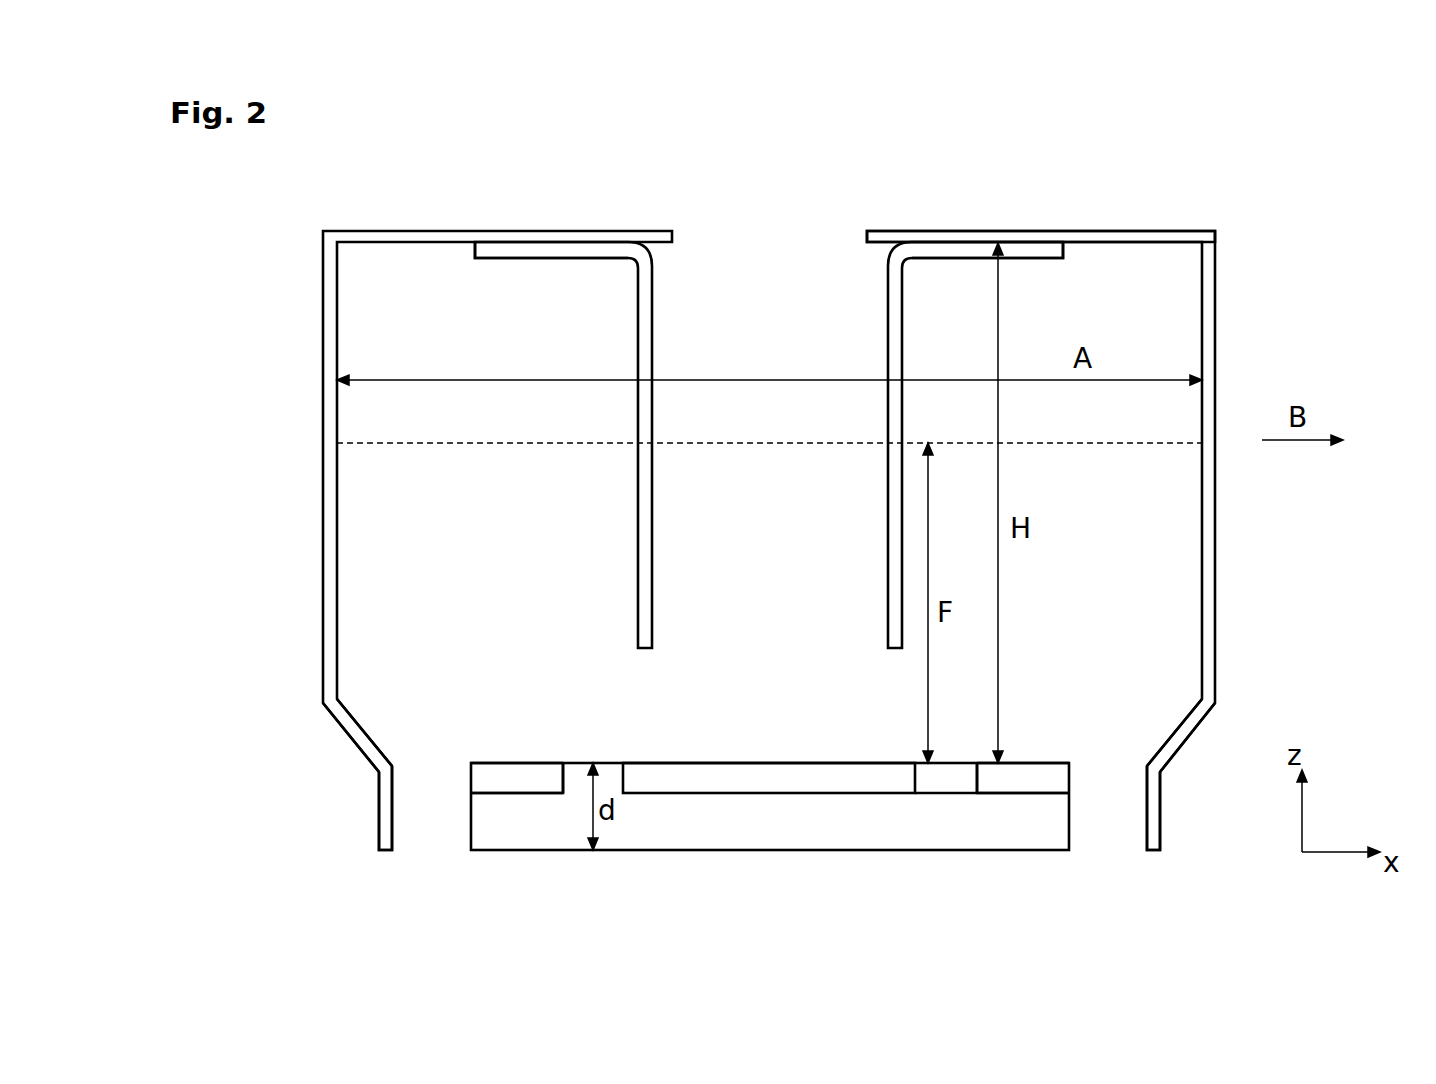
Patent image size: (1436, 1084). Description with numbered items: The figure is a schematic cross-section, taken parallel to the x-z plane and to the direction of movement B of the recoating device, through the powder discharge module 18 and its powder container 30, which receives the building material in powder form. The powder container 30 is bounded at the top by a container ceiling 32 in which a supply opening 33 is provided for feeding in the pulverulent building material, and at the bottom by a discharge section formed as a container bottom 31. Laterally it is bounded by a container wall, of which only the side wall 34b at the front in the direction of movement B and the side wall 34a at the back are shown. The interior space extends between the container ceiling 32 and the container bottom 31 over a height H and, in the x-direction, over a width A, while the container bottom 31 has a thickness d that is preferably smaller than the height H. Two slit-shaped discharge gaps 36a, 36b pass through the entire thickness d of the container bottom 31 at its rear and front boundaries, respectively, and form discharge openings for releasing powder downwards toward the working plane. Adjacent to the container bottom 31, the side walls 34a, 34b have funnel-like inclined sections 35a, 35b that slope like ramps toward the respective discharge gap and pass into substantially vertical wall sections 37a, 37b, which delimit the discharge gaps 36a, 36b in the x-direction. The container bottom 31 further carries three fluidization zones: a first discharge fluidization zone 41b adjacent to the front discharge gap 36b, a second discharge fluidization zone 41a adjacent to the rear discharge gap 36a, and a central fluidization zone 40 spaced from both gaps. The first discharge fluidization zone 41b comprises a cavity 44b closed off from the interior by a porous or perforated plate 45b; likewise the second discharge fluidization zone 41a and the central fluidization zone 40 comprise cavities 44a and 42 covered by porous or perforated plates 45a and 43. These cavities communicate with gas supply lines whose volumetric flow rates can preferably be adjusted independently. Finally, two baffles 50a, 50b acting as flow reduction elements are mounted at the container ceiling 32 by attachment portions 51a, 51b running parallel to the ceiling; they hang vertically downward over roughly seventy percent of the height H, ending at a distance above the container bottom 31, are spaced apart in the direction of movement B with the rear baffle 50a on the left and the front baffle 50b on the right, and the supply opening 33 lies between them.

The powder discharge module 18 is at (1062, 184).
The powder container 30 is at (316, 510).
The container bottom 31 is at (367, 792).
The container ceiling 32 is at (1123, 238).
The supply opening 33 is at (737, 241).
The side wall 34a is at (330, 311).
The side wall 34b is at (1208, 316).
The inclined section 35a is at (350, 732).
The inclined section 35b is at (1175, 740).
The discharge gap 36a is at (418, 848).
The discharge gap 36b is at (1093, 848).
The vertical wall section 37a is at (383, 820).
The vertical wall section 37b is at (1152, 817).
The central fluidization zone 40 is at (737, 772).
The second discharge fluidization zone 41a is at (551, 783).
The first discharge fluidization zone 41b is at (988, 784).
The cavity 42 is at (850, 780).
The porous plate and/or perforated plate 43 is at (772, 763).
The cavity 44a is at (494, 778).
The cavity 44b is at (1028, 777).
The porous plate and/or perforated plate 45a is at (530, 763).
The porous plate and/or perforated plate 45b is at (1035, 763).
The baffle 50a is at (645, 328).
The baffle 50b is at (893, 328).
The attachment portion 51a is at (507, 250).
The attachment portion 51b is at (937, 250).